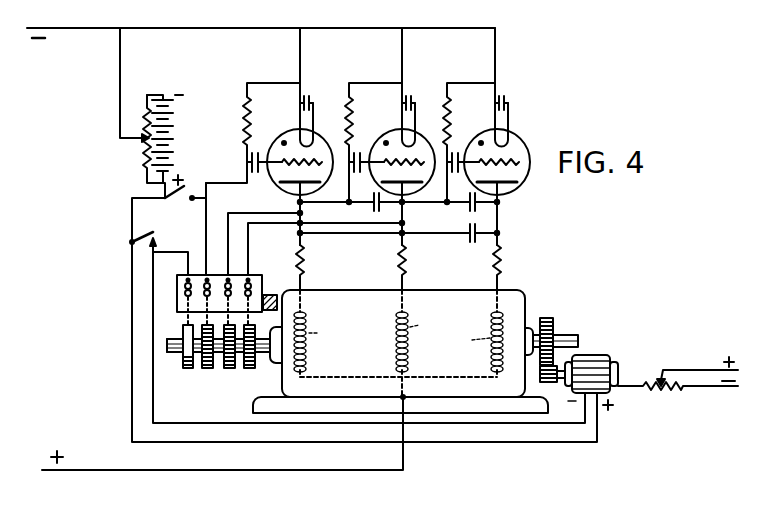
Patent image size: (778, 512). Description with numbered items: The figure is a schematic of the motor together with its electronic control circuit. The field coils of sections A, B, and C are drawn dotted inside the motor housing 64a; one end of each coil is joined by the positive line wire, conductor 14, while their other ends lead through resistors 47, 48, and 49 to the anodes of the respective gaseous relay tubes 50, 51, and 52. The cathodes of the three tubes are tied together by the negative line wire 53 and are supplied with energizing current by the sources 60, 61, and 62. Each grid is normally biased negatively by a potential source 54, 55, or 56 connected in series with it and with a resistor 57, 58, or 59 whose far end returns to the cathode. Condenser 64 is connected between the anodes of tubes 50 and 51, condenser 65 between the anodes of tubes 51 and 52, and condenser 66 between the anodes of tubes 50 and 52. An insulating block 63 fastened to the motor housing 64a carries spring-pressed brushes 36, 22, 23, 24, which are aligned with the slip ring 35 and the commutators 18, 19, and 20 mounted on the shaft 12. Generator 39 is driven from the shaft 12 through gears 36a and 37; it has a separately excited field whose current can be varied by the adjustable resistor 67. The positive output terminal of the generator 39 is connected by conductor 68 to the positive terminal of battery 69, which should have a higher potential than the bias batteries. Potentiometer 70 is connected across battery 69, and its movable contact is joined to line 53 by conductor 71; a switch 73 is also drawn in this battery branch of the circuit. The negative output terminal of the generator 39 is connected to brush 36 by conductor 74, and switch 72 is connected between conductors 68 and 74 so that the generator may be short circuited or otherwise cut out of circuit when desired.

The negative line wire 53 is at (143, 27).
The conductor 71 is at (120, 79).
The potentiometer 70 is at (143, 143).
The battery 69 is at (173, 148).
The switch 73 is at (184, 206).
The switch 72 is at (147, 248).
The conductor 68 is at (131, 392).
The conductor 74 is at (155, 397).
The conductor 14 is at (190, 472).
The resistor 57 is at (245, 107).
The resistor 58 is at (348, 102).
The resistor 59 is at (447, 102).
The potential source 54 is at (254, 174).
The potential source 55 is at (360, 173).
The potential source 56 is at (456, 173).
The gaseous relay tube 50 is at (291, 141).
The gaseous relay tube 51 is at (386, 128).
The gaseous relay tube 52 is at (483, 128).
The cathode source 60 is at (307, 95).
The cathode source 61 is at (410, 95).
The cathode source 62 is at (510, 95).
The condenser 64 is at (376, 204).
The condenser 65 is at (470, 205).
The condenser 66 is at (468, 239).
The resistor 47 is at (306, 257).
The resistor 48 is at (398, 257).
The resistor 49 is at (493, 266).
The spring-pressed brush 22 is at (210, 279).
The spring-pressed brush 23 is at (232, 279).
The spring-pressed brush 24 is at (259, 277).
The insulating block 63 is at (178, 291).
The motor housing 64a is at (312, 290).
The shaft 12 is at (167, 346).
The spring-pressed brush 36 is at (184, 323).
The slip ring 35 is at (190, 370).
The commutator 18 is at (208, 370).
The commutator 19 is at (230, 370).
The commutator 20 is at (250, 370).
The gear 36a is at (552, 323).
The gear 37 is at (552, 384).
The generator 39 is at (607, 357).
The adjustable resistor 67 is at (670, 378).